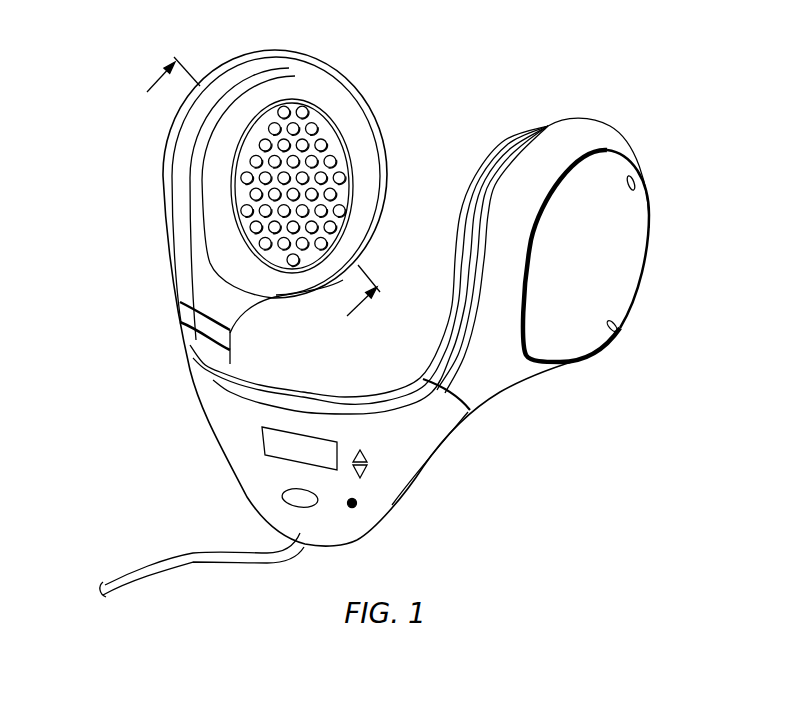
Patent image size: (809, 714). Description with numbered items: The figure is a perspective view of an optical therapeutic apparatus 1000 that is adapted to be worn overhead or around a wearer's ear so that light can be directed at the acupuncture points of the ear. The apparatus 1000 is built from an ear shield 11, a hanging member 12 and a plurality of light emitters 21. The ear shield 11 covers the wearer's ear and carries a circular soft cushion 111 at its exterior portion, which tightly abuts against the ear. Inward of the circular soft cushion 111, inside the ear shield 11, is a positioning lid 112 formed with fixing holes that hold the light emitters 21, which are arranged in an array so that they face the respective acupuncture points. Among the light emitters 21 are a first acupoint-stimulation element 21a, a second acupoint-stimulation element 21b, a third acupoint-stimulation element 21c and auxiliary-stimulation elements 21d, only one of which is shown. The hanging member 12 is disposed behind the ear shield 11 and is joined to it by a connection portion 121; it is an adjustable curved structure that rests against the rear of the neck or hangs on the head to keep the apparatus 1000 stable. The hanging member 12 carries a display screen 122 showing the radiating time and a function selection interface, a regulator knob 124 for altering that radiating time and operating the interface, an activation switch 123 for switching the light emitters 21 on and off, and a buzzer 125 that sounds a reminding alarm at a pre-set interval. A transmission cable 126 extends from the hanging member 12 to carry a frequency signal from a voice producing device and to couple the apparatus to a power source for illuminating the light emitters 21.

The optical therapeutic apparatus 1000 is at (766, 70).
The ear shield 11 is at (600, 134).
The circular soft cushion 111 is at (512, 132).
The positioning lid 112 is at (311, 108).
The light emitters 21 is at (432, 127).
The first acupoint-stimulation element 21a is at (318, 131).
The second acupoint-stimulation element 21b is at (341, 164).
The third acupoint-stimulation element 21c is at (341, 194).
The auxiliary-stimulation element 21d is at (328, 228).
The hanging member 12 is at (413, 447).
The connection portion 121 is at (447, 397).
The display screen 122 is at (273, 443).
The activation switch 123 is at (282, 488).
The regulator knob 124 is at (356, 448).
The buzzer 125 is at (355, 508).
The transmission cable 126 is at (203, 562).